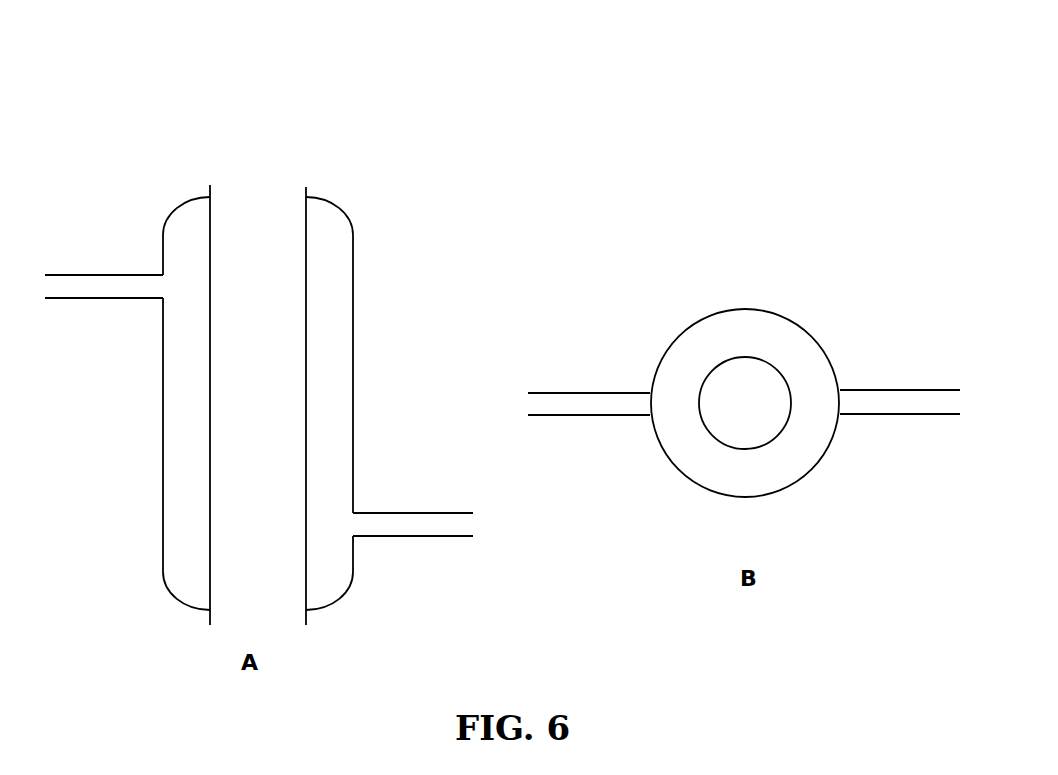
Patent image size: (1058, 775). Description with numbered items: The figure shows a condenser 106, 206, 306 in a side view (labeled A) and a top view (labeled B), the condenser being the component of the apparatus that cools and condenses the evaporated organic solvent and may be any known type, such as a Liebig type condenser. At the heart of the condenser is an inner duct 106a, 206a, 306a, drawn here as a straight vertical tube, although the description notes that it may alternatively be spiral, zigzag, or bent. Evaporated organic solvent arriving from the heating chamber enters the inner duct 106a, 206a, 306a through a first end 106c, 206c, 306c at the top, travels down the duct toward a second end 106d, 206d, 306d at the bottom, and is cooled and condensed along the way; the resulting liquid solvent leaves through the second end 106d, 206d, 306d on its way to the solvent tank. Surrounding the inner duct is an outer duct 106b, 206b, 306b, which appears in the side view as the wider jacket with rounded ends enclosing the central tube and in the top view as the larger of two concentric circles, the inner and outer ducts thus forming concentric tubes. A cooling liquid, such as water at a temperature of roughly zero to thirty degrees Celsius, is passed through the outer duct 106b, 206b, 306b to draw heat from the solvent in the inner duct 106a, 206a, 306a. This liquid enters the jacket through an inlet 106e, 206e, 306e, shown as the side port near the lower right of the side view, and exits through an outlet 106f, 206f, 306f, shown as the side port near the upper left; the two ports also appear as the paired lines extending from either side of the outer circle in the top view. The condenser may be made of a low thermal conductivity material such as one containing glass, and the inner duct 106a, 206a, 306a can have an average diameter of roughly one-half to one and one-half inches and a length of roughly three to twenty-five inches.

The condenser 106 is at (502, 374).
The condenser 206 is at (502, 374).
The condenser 306 is at (502, 374).
The inner duct 106a is at (559, 405).
The inner duct 206a is at (559, 405).
The inner duct 306a is at (853, 355).
The outer duct 106b is at (501, 403).
The outer duct 206b is at (501, 403).
The outer duct 306b is at (768, 277).
The first end 106c is at (330, 154).
The first end 206c is at (330, 154).
The first end 306c is at (268, 163).
The second end 106d is at (334, 641).
The second end 206d is at (334, 641).
The second end 306d is at (266, 629).
The inlet 106e is at (656, 463).
The inlet 206e is at (656, 463).
The inlet 306e is at (388, 503).
The outlet 106f is at (347, 345).
The outlet 206f is at (347, 345).
The outlet 306f is at (148, 310).